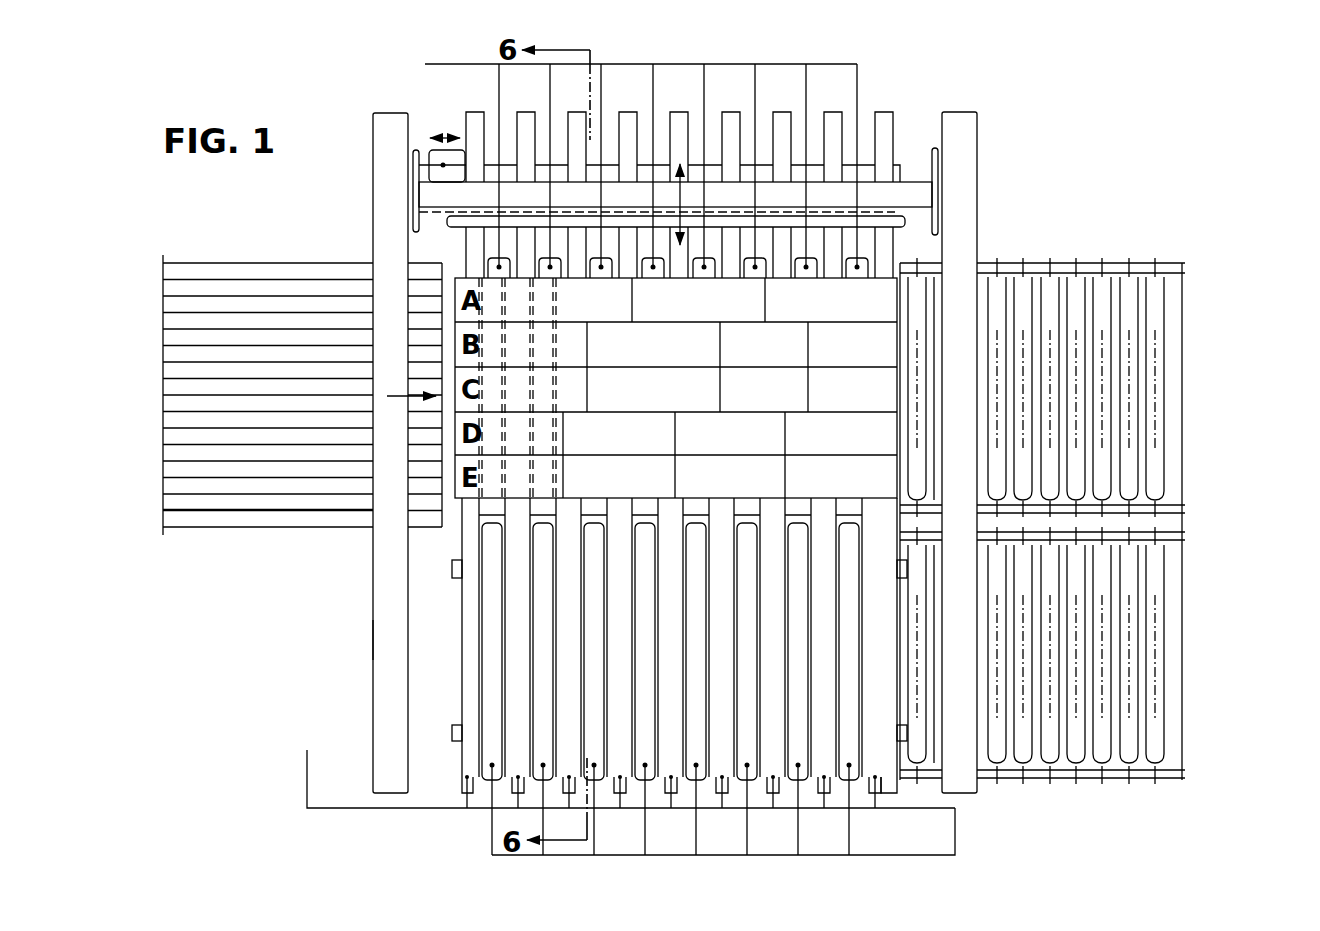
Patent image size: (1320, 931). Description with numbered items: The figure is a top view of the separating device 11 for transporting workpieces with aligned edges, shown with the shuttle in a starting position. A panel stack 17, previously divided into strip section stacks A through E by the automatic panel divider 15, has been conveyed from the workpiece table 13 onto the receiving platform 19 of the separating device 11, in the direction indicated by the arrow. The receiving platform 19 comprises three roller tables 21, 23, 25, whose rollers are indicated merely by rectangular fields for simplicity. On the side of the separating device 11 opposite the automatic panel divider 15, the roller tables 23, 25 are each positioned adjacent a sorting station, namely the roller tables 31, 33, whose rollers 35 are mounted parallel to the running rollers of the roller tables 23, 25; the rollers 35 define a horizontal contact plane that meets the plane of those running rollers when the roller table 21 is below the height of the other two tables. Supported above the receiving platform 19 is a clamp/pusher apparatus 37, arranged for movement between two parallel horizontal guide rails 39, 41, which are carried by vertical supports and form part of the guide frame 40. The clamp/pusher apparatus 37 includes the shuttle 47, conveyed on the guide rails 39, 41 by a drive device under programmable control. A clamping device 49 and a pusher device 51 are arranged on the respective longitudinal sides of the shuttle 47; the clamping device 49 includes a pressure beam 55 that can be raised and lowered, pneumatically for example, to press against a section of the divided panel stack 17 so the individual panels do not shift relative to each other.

The separating device 11 is at (738, 92).
The workpiece table 13 is at (216, 533).
The automatic panel divider 15 is at (301, 538).
The panel stack 17 is at (1032, 247).
The receiving platform 19 is at (454, 686).
The roller table 21 is at (615, 777).
The roller table 23 is at (634, 50).
The roller table 25 is at (727, 809).
The roller table 31 is at (1075, 519).
The roller table 33 is at (1070, 655).
The rollers 35 is at (1153, 428).
The clamp/pusher apparatus 37 is at (907, 176).
The guide rail 39 is at (960, 158).
The guide frame 40 is at (353, 625).
The guide rail 41 is at (385, 130).
The shuttle 47 is at (649, 178).
The clamping device 49 is at (436, 230).
The pusher device 51 is at (443, 166).
The pressure beam 55 is at (905, 221).